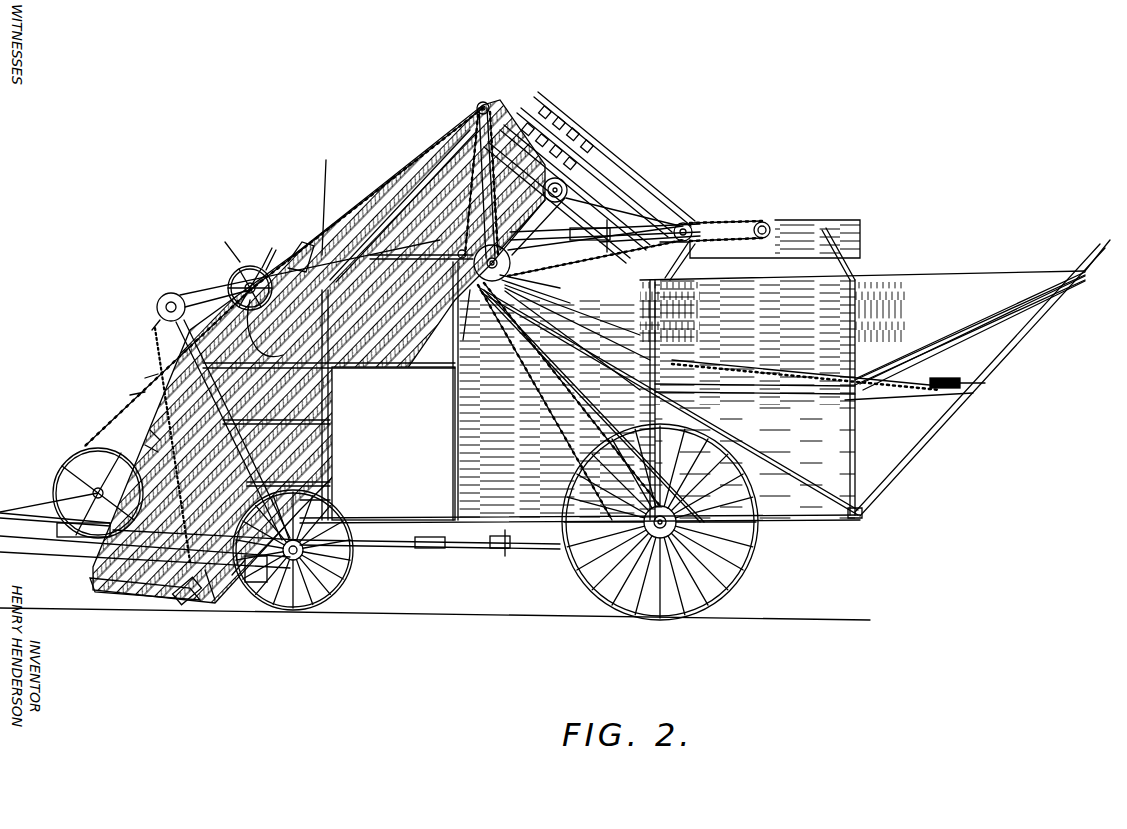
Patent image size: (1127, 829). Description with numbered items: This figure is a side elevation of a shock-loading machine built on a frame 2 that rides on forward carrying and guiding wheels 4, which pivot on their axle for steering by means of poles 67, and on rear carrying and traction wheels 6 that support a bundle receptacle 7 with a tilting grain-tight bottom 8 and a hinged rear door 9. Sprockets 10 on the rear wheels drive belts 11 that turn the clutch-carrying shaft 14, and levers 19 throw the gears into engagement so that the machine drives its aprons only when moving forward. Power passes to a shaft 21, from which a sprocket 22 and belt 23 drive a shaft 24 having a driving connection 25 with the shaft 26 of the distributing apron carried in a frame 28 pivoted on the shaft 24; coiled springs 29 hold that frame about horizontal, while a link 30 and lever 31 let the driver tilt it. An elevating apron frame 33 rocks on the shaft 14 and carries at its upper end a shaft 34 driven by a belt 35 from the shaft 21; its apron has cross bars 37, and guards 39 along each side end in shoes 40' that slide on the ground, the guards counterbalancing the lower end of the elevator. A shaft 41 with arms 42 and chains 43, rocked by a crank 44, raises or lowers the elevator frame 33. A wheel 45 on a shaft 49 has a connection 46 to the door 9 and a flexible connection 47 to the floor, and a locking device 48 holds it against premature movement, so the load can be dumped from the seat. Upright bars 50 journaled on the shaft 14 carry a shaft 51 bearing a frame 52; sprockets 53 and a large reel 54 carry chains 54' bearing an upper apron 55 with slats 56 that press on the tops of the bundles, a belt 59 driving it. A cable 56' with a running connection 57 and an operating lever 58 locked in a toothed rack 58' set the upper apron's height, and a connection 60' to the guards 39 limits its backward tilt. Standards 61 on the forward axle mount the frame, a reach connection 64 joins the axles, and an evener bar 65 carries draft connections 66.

The frame 2 is at (455, 512).
The forward carrying and guiding wheels 4 is at (288, 610).
The rear carrying and traction wheels 6 is at (740, 575).
The bundle receptacle 7 is at (771, 395).
The tilting grain-tight bottom 8 is at (860, 515).
The hinged rear door 9 is at (1086, 265).
The sprockets 10 is at (752, 552).
The driving belts 11 is at (552, 420).
The shaft 14 is at (576, 335).
The levers 19 is at (488, 325).
The shaft 21 is at (535, 286).
The sprocket 22 is at (511, 263).
The belt 23 is at (648, 248).
The shaft 24 is at (692, 238).
The driving connection 25 is at (730, 222).
The shaft 26 is at (776, 226).
The frame 28 is at (764, 221).
The coiled springs 29 is at (690, 225).
The link 30 is at (670, 215).
The lever 31 is at (586, 250).
The elevating apron frame 33 is at (338, 410).
The shaft 34 is at (563, 185).
The belt 35 is at (558, 208).
The cross bars 37 is at (206, 600).
The guards 39 is at (112, 576).
The shoes 40' is at (172, 608).
The shaft 41 is at (157, 306).
The arms 42 is at (152, 326).
The chains 43 is at (156, 353).
The crank 44 is at (308, 237).
The wheel 45 is at (233, 272).
The connection 46 is at (690, 364).
The flexible connection 47 is at (448, 330).
The locking device 48 is at (272, 250).
The shaft 49 is at (228, 287).
The upright bars 50 is at (470, 125).
The shaft 51 is at (472, 105).
The frame 52 is at (380, 200).
The sprockets 53 is at (485, 107).
The reel 54 is at (77, 493).
The chains 54' is at (128, 378).
The apron 55 is at (132, 395).
The slats 56 is at (232, 294).
The cable 56' is at (139, 427).
The running connection 57 is at (145, 445).
The operating lever 58 is at (233, 430).
The toothed rack 58' is at (271, 328).
The belt 59 is at (495, 132).
The connection 60' is at (366, 199).
The standards 61 is at (332, 500).
The reach connection 64 is at (495, 550).
The evener bar 65 is at (430, 549).
The draft connections 66 is at (55, 537).
The poles 67 is at (240, 570).